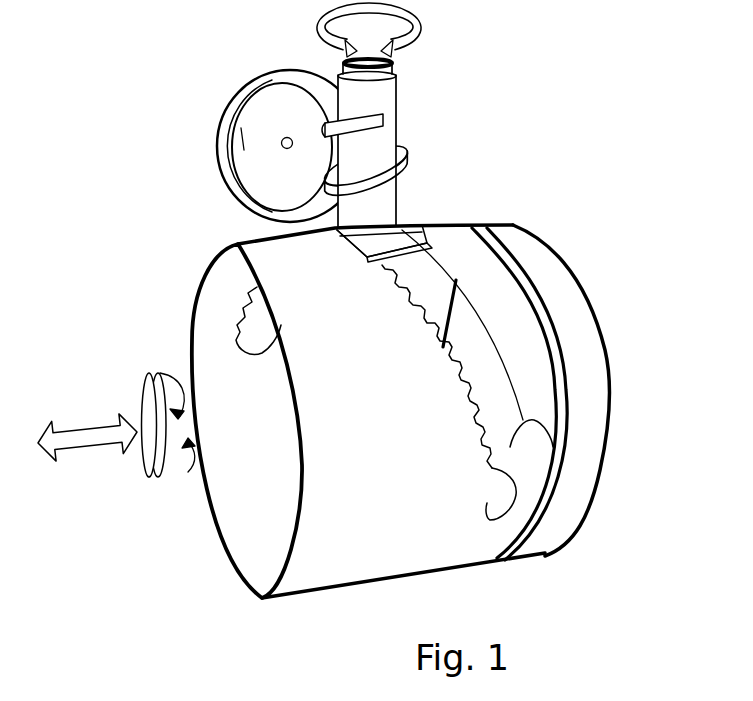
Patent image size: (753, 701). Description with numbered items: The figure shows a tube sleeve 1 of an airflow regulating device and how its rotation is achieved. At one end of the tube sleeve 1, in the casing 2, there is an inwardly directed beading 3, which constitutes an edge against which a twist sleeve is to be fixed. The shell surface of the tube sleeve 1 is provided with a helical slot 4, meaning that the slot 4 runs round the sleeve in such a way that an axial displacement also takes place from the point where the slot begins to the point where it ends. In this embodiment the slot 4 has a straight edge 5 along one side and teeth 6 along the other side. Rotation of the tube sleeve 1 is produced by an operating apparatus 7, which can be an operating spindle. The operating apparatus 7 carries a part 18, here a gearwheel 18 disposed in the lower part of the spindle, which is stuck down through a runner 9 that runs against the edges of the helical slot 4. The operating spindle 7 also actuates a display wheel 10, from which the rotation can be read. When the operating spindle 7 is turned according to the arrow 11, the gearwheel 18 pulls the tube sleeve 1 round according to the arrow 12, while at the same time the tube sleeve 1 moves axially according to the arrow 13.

The tube sleeve 1 is at (614, 347).
The casing 2 is at (600, 418).
The inwardly directed beading 3 is at (547, 300).
The helical slot 4 is at (535, 422).
The straight edge 5 is at (537, 473).
The teeth 6 is at (523, 427).
The operating apparatus 7 is at (397, 145).
The runner 9 is at (422, 227).
The display wheel 10 is at (240, 112).
The arrow 11 is at (315, 20).
The arrow 12 is at (150, 373).
The arrow 13 is at (83, 442).
The gearwheel 18 is at (382, 262).